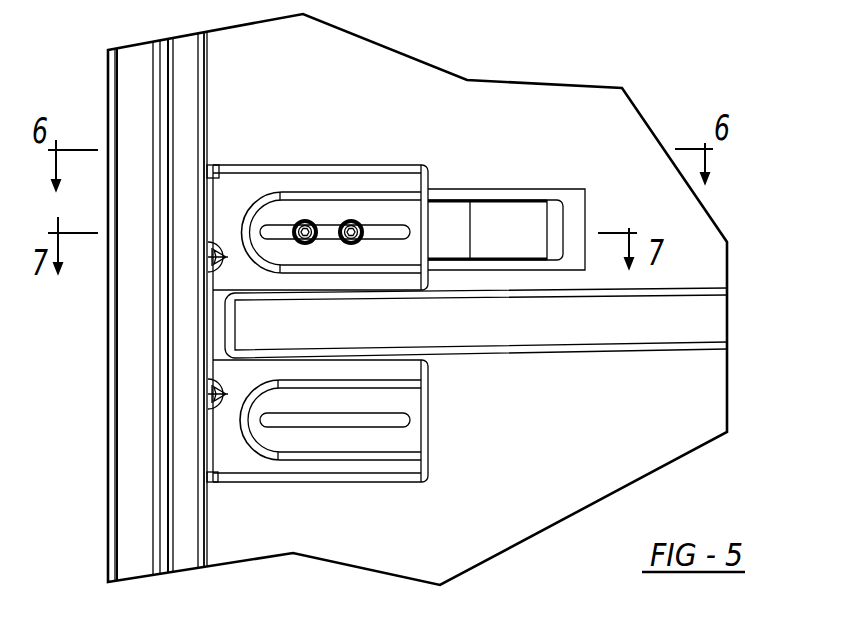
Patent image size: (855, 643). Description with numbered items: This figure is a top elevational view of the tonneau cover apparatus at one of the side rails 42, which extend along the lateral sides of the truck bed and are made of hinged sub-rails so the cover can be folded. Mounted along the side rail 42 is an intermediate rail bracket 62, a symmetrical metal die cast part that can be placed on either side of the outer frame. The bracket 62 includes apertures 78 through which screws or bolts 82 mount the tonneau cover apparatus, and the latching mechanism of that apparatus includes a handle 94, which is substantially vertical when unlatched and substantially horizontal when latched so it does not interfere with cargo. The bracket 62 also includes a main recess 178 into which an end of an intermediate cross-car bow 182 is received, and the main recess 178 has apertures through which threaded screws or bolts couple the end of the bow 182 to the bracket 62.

The side rail 42 is at (136, 485).
The intermediate rail bracket 62 is at (233, 190).
The aperture 78 is at (285, 228).
The bolt 82 is at (352, 221).
The handle 94 is at (508, 225).
The main recess 178 is at (228, 330).
The intermediate cross-car bow 182 is at (648, 310).